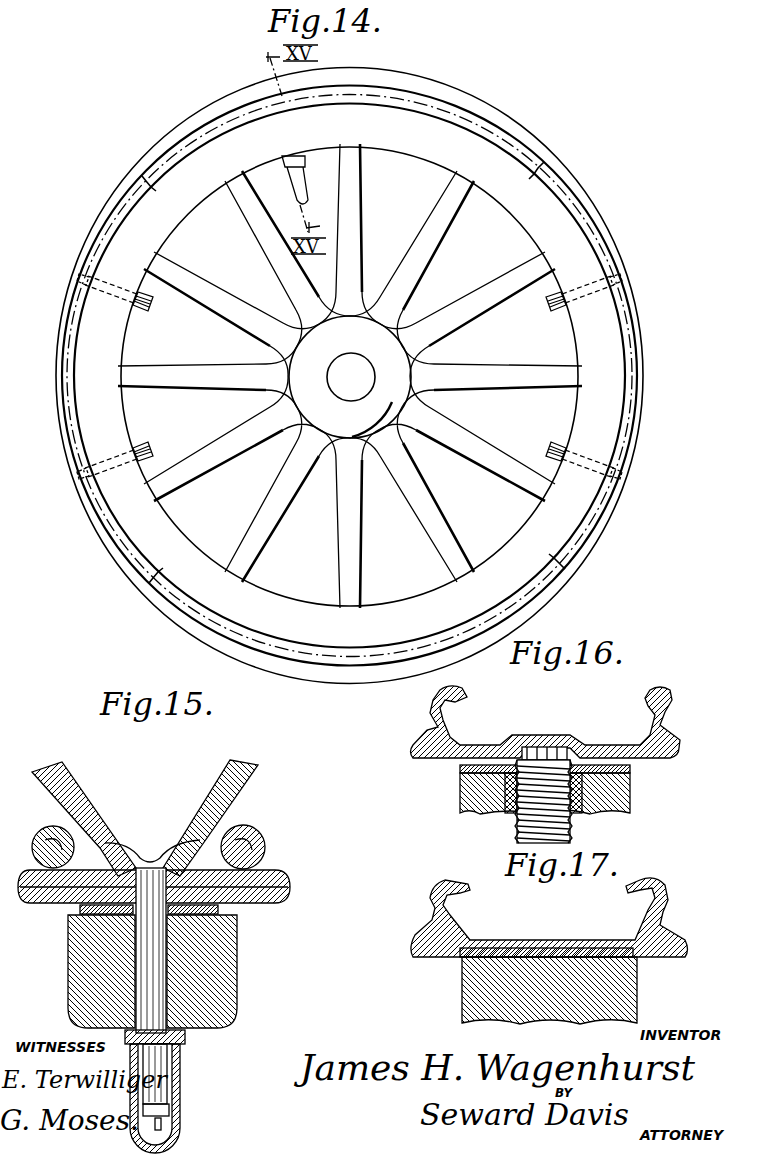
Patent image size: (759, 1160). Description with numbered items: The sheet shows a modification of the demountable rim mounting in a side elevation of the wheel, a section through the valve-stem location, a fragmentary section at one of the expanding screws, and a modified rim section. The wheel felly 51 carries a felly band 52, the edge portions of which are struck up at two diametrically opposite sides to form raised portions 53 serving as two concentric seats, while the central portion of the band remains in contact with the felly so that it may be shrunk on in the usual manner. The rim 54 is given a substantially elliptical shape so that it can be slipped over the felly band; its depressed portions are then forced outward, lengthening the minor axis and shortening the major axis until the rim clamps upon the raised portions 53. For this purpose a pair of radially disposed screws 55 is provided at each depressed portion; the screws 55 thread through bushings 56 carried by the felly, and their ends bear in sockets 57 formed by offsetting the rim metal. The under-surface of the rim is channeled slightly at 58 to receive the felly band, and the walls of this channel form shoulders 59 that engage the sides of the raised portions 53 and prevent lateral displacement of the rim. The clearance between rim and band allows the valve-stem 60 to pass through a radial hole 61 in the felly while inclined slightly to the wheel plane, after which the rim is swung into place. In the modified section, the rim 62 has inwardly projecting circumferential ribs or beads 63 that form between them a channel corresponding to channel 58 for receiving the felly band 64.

In FIG. 14, the wheel felly 51 is at (284, 599).
In FIG. 16, the wheel felly 51 is at (630, 797).
In FIG. 14, the felly band 52 is at (163, 514).
In FIG. 16, the felly band 52 is at (480, 770).
In FIG. 14, the raised portions of the felly band 53 is at (433, 100).
In FIG. 15, the raised portions of the felly band 53 is at (70, 908).
In FIG. 14, the rim 54 is at (335, 681).
In FIG. 15, the rim 54 is at (260, 898).
In FIG. 16, the rim 54 is at (415, 756).
In FIG. 14, the expanding screws 55 is at (154, 313).
In FIG. 16, the expanding screws 55 is at (520, 830).
In FIG. 16, the threaded bushings 56 is at (575, 806).
In FIG. 16, the sockets 57 is at (526, 746).
In FIG. 16, the channel 58 is at (470, 762).
In FIG. 15, the shoulders 59 is at (57, 904).
In FIG. 15, the valve-stem 60 is at (147, 960).
In FIG. 15, the radial hole 61 is at (140, 993).
In FIG. 17, the rim 62 is at (440, 956).
In FIG. 17, the circumferential ribs or beads 63 is at (460, 950).
In FIG. 17, the felly band 64 is at (470, 965).